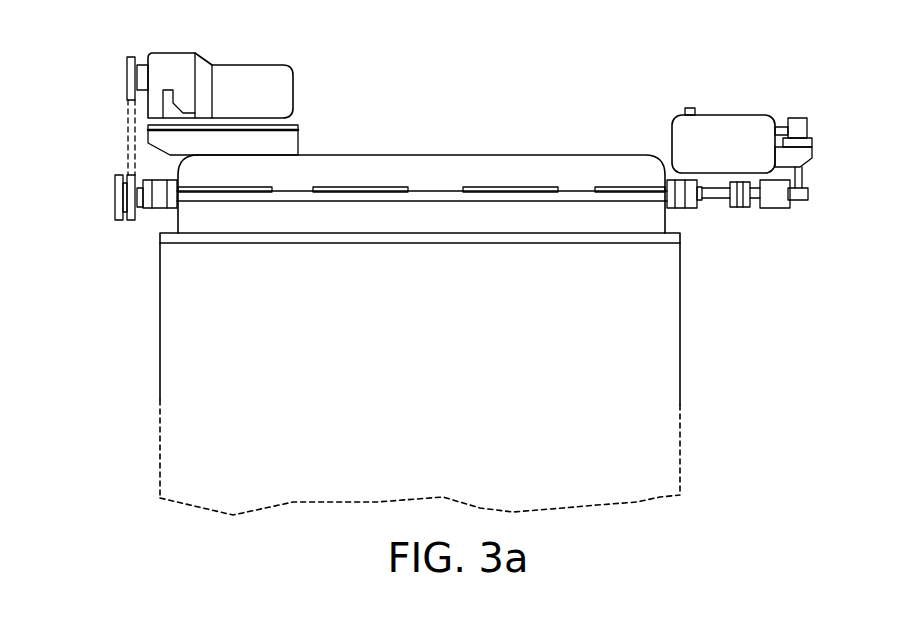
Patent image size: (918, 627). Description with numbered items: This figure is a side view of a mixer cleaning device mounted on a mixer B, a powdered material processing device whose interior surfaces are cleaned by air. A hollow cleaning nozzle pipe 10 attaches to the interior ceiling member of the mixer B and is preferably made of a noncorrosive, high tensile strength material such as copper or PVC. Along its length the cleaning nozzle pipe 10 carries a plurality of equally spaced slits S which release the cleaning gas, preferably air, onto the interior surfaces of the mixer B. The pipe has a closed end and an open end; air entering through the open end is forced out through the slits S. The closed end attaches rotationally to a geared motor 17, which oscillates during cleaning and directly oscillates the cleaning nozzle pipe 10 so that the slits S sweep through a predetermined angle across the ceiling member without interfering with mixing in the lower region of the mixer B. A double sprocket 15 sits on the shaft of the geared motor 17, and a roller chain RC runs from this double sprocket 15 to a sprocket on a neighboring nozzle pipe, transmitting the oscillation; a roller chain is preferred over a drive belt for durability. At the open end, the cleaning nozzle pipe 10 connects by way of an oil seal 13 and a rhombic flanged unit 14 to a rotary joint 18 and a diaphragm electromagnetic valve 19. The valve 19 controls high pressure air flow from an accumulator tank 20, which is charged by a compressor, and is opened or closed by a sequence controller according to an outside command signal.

The cleaning nozzle pipe 10 is at (492, 197).
The oil seal 13 is at (172, 203).
The rhombic flanged unit 14 is at (152, 205).
The double sprocket 15 is at (115, 203).
The geared motor 17 is at (250, 78).
The rotary joint 18 is at (773, 195).
The diaphragm electromagnetic valve 19 is at (790, 155).
The accumulator tank 20 is at (722, 150).
The slits S is at (293, 188).
The mixer B is at (190, 383).
The roller chain RC is at (127, 142).